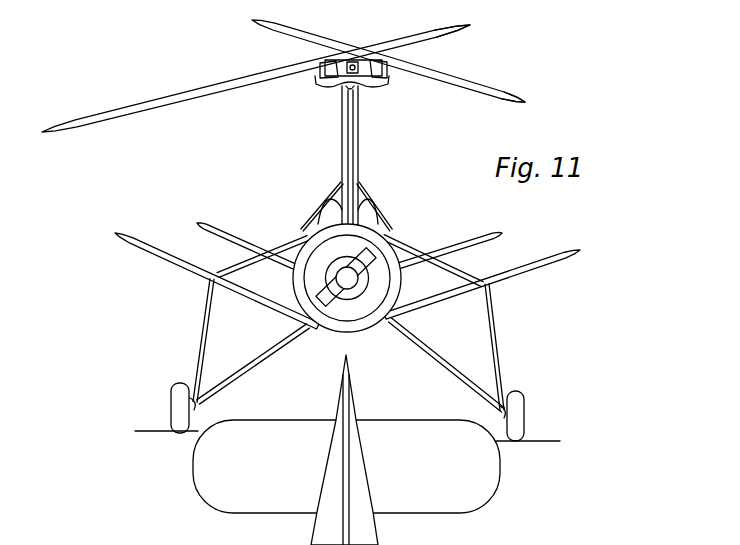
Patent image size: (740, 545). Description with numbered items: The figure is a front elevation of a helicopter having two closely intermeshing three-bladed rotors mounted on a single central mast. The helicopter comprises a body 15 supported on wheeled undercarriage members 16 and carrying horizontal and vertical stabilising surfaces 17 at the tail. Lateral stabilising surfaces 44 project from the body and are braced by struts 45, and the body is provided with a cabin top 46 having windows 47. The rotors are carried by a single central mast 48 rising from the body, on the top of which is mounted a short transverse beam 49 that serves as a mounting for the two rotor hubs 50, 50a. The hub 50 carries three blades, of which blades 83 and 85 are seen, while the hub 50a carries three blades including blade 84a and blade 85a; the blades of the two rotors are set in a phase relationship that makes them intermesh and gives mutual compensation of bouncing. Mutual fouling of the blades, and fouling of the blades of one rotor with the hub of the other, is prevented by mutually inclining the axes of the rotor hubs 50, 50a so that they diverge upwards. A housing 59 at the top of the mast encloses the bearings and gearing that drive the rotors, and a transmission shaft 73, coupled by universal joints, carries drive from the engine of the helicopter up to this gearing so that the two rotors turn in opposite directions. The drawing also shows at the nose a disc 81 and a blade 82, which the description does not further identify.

The body 15 is at (386, 331).
The wheeled undercarriage members 16 is at (178, 392).
The horizontal and vertical stabilising surfaces 17 is at (250, 243).
The lateral stabilising surfaces 44 is at (160, 254).
The struts 45 is at (237, 265).
The cabin top 46 is at (340, 193).
The windows 47 is at (367, 214).
The central mast 48 is at (359, 128).
The transverse beam 49 is at (337, 72).
The rotor hub 50 is at (386, 50).
The rotor hub 50a is at (324, 62).
The housing 59 is at (388, 84).
The transmission shaft 73 is at (353, 152).
The propeller disc 81 is at (350, 307).
The propeller blade 82 is at (327, 292).
The blade 83 is at (264, 28).
The blade 84a is at (196, 94).
The blade 85 is at (484, 89).
The blade 85a is at (461, 29).